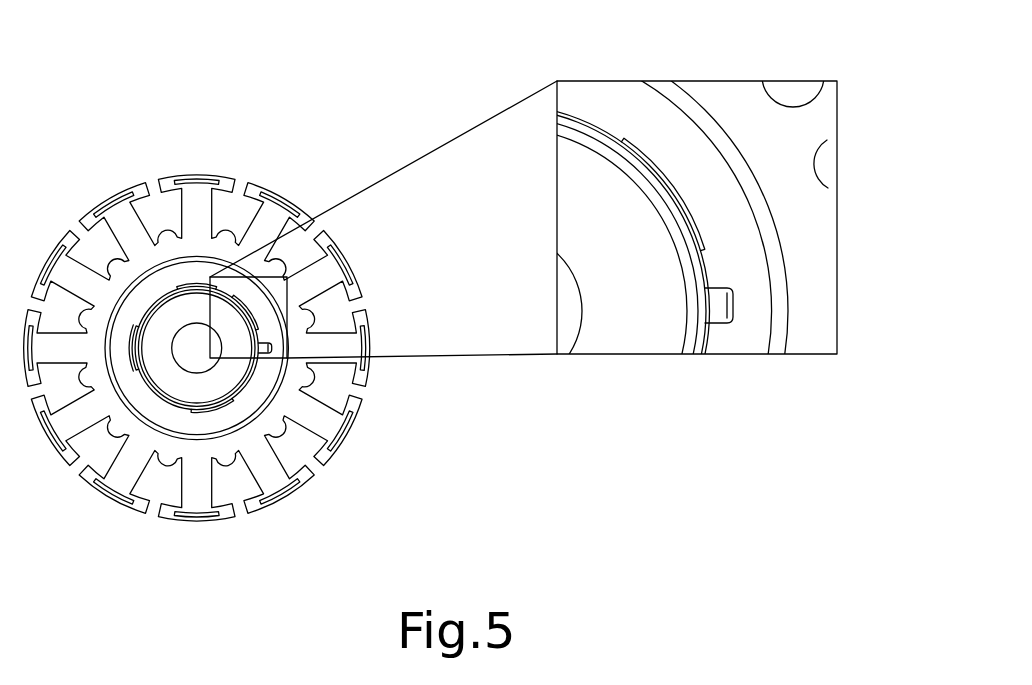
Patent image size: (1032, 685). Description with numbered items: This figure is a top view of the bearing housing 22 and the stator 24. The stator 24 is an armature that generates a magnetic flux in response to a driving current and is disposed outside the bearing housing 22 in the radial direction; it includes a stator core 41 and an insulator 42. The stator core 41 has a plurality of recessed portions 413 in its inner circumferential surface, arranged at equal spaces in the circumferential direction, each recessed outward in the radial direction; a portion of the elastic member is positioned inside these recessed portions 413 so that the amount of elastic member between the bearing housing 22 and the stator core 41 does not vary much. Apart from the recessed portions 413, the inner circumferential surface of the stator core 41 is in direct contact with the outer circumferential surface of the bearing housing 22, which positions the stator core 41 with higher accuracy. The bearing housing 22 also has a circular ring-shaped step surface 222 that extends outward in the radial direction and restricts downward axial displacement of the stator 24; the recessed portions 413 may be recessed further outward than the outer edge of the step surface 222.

The stator 24 is at (204, 135).
The bearing housing 22 is at (213, 400).
The stator core 41 is at (711, 205).
The insulator 42 is at (780, 147).
The recessed portions 413 is at (163, 413).
The step surface 222 is at (716, 303).